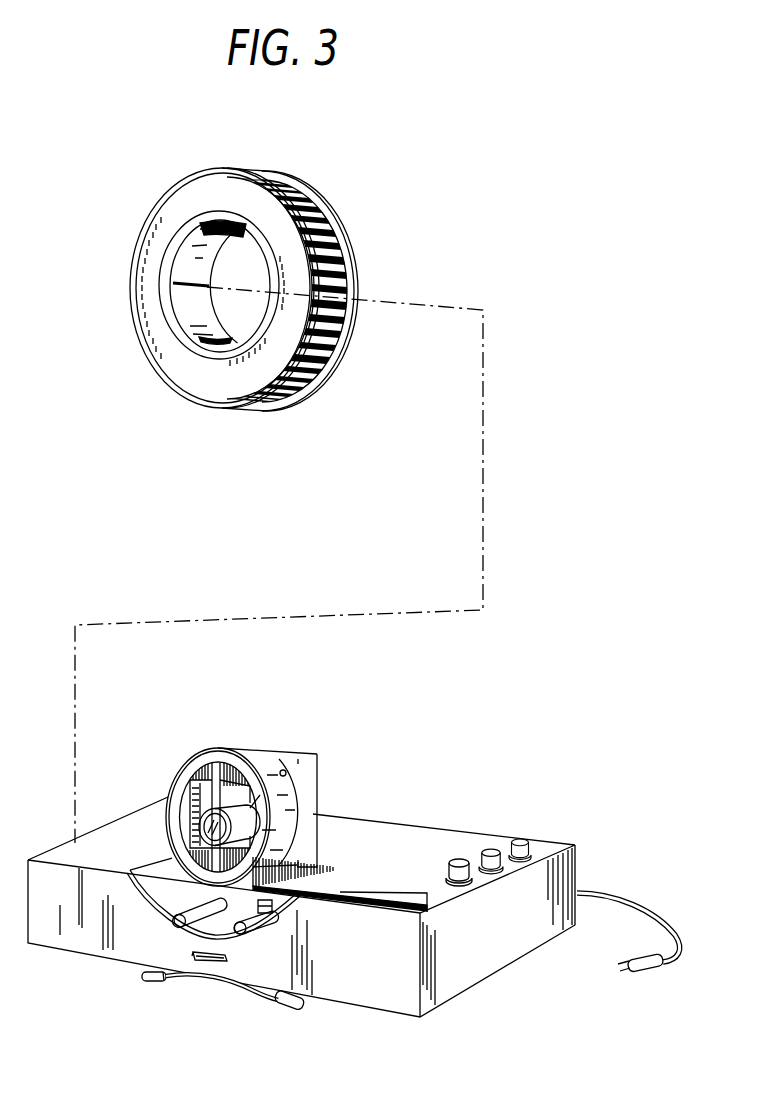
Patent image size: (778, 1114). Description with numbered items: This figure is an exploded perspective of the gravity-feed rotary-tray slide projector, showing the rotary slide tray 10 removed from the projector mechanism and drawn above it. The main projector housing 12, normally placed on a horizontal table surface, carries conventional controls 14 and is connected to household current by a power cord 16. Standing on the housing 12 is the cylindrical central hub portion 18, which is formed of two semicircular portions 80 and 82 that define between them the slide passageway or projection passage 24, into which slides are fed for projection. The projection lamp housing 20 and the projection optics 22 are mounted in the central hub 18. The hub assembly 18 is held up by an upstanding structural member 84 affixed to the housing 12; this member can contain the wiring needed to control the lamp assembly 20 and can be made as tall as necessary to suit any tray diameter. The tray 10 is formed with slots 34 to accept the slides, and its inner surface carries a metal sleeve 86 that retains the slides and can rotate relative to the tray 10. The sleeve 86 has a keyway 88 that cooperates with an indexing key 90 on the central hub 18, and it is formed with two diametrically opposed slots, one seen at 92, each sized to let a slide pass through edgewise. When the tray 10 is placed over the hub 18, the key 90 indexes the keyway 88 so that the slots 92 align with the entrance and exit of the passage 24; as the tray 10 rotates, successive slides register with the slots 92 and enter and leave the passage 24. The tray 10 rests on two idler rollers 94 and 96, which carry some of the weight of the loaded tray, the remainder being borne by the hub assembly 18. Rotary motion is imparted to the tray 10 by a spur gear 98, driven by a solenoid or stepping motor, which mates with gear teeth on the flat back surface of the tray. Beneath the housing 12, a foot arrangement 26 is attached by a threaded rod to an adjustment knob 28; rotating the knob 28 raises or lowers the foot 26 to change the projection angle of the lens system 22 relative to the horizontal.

The rotary slide tray 10 is at (245, 289).
The slots 34 is at (343, 273).
The keyway 88 is at (232, 242).
The slot 92 is at (178, 282).
The metal sleeve 86 is at (193, 333).
The main projector housing 12 is at (354, 902).
The controls 14 is at (503, 848).
The power cord 16 is at (638, 896).
The central hub portion 18 is at (252, 795).
The semicircular portion 80 is at (288, 818).
The upstanding structural member 84 is at (308, 788).
The indexing key 90 is at (286, 773).
The semicircular portion 82 is at (188, 763).
The projection lamp housing 20 is at (192, 818).
The projection optics 22 is at (258, 800).
The spur gear 98 is at (268, 903).
The projection passage 24 is at (155, 907).
The idler roller 96 is at (175, 925).
The idler roller 94 is at (252, 927).
The foot arrangement 26 is at (246, 990).
The adjustment knob 28 is at (198, 962).